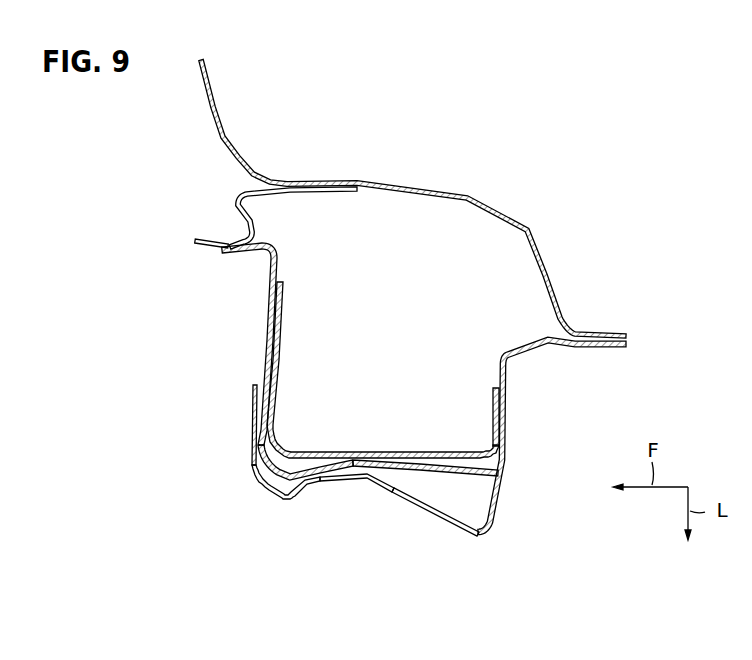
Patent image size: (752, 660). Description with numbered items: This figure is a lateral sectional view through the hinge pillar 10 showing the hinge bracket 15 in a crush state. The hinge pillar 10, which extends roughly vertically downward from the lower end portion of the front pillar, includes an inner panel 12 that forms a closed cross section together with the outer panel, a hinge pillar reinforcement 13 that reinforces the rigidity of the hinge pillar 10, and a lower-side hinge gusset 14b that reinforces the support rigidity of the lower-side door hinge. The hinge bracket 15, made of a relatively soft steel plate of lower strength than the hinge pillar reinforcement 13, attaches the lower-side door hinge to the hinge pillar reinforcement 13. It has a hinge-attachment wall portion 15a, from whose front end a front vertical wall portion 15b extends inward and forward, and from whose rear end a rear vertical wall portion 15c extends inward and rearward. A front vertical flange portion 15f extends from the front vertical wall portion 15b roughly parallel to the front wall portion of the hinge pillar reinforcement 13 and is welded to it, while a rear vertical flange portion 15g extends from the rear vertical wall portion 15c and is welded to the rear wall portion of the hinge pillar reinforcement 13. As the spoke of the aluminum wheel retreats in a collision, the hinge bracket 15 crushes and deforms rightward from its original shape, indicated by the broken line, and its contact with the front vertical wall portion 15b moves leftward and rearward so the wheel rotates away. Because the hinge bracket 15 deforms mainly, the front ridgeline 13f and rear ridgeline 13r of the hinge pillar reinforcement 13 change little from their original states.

The hinge pillar 10 is at (557, 226).
The inner panel 12 is at (480, 202).
The hinge pillar reinforcement 13 is at (539, 354).
The front ridgeline 13f is at (260, 475).
The rear ridgeline 13r is at (497, 477).
The lower-side hinge gusset 14b is at (283, 318).
The hinge bracket 15 is at (387, 500).
The hinge-attachment wall portion 15a is at (392, 495).
The front vertical wall portion 15b is at (303, 495).
The rear vertical wall portion 15c is at (469, 526).
The front vertical flange portion 15f is at (253, 407).
The rear vertical flange portion 15g is at (507, 460).